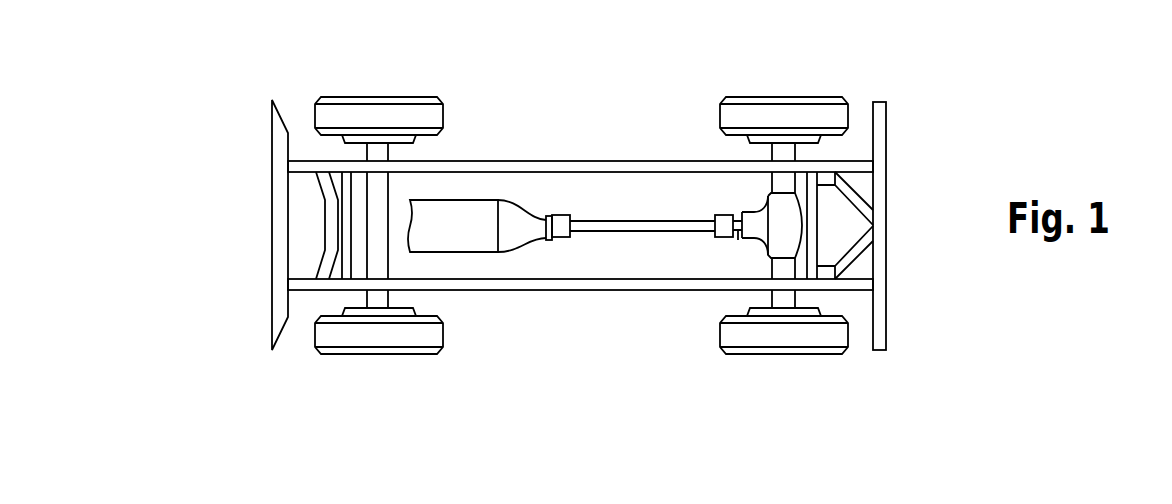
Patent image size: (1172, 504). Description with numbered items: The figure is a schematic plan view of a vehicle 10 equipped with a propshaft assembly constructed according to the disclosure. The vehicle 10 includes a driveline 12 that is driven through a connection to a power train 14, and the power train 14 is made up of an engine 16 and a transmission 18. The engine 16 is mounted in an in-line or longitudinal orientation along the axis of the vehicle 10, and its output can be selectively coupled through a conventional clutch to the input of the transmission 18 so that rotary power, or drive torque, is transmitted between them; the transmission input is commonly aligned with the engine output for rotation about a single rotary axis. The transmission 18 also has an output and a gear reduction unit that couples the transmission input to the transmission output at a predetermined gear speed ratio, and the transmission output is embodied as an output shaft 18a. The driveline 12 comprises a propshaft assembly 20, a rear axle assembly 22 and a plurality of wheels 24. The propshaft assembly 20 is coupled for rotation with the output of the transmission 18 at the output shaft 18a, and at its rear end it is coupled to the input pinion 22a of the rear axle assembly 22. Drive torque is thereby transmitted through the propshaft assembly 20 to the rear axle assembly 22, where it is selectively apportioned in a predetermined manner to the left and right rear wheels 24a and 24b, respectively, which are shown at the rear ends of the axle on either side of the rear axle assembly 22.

The vehicle 10 is at (538, 105).
The driveline 12 is at (730, 206).
The power train 14 is at (477, 261).
The engine 16 is at (466, 237).
The transmission 18 is at (582, 229).
The output shaft 18a is at (548, 240).
The propshaft assembly 20 is at (640, 220).
The rear axle assembly 22 is at (722, 255).
The input pinion 22a is at (738, 237).
The wheels 24 is at (630, 199).
The left rear wheel 24a is at (733, 329).
The right rear wheel 24b is at (816, 101).